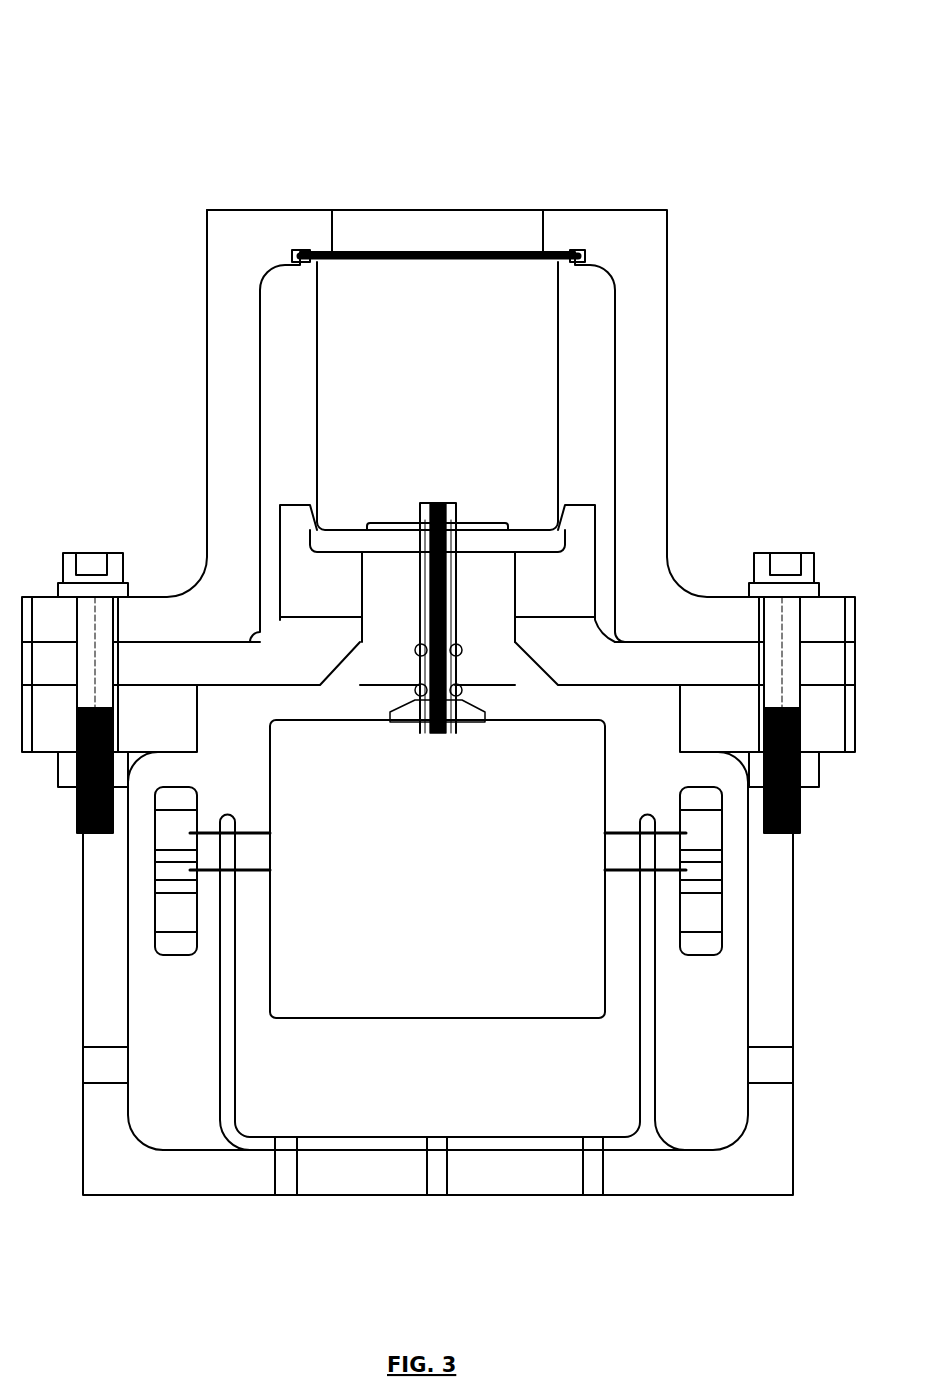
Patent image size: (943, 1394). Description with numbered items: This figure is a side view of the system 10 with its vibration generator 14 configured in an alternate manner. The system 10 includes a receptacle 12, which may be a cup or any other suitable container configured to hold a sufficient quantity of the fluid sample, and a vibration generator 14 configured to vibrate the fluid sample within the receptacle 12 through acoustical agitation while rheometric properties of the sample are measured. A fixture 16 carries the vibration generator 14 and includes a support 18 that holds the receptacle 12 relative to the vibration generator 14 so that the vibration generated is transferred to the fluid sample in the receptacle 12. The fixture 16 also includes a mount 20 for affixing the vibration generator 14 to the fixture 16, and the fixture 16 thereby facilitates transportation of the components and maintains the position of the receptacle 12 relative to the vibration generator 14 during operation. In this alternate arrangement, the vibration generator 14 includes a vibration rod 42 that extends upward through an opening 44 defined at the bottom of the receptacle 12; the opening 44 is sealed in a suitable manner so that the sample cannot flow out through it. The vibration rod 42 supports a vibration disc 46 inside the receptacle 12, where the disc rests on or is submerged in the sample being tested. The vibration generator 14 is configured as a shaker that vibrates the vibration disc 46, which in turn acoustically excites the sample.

The system 10 is at (157, 38).
The receptacle 12 is at (555, 328).
The vibration generator 14 is at (555, 1020).
The fixture 16 is at (238, 210).
The support 18 is at (573, 510).
The mount 20 is at (218, 1100).
The vibration rod 42 is at (423, 600).
The opening 44 is at (423, 557).
The vibration disc 46 is at (490, 527).